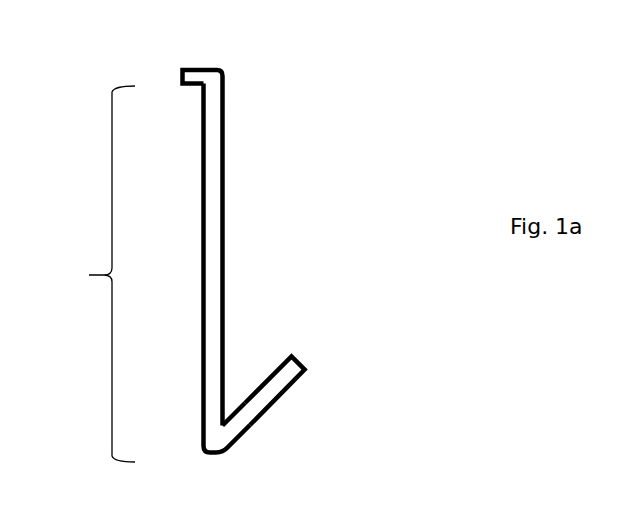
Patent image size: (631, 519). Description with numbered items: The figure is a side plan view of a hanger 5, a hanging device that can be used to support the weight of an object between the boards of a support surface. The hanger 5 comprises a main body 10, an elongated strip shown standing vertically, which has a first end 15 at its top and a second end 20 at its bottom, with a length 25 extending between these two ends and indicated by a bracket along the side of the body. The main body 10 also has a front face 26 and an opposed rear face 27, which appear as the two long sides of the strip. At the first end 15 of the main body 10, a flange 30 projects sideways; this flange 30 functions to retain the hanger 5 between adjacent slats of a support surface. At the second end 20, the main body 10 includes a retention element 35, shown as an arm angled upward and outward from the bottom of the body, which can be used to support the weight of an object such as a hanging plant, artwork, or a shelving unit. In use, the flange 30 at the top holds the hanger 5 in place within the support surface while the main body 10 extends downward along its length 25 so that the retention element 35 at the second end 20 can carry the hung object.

The hanger 5 is at (414, 88).
The main body 10 is at (217, 248).
The first end 15 is at (217, 79).
The second end 20 is at (212, 442).
The length 25 is at (82, 274).
The front face 26 is at (225, 195).
The rear face 27 is at (203, 364).
The flange 30 is at (201, 77).
The retention element 35 is at (270, 390).